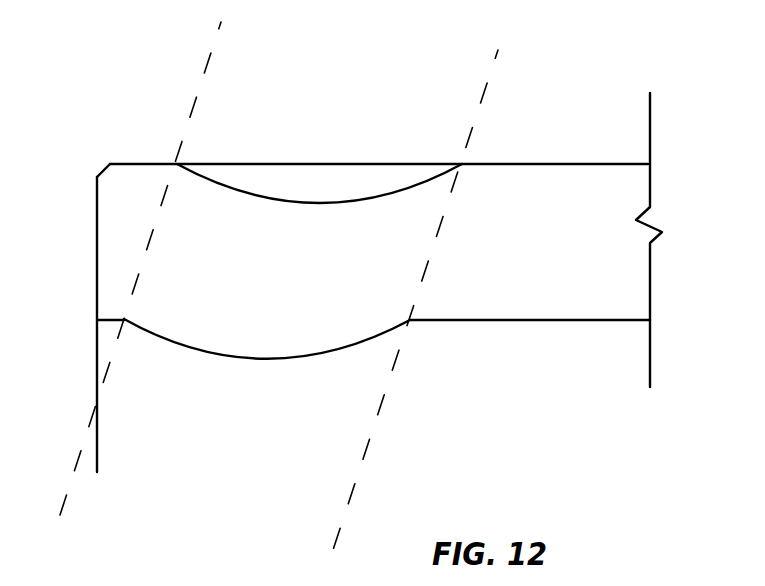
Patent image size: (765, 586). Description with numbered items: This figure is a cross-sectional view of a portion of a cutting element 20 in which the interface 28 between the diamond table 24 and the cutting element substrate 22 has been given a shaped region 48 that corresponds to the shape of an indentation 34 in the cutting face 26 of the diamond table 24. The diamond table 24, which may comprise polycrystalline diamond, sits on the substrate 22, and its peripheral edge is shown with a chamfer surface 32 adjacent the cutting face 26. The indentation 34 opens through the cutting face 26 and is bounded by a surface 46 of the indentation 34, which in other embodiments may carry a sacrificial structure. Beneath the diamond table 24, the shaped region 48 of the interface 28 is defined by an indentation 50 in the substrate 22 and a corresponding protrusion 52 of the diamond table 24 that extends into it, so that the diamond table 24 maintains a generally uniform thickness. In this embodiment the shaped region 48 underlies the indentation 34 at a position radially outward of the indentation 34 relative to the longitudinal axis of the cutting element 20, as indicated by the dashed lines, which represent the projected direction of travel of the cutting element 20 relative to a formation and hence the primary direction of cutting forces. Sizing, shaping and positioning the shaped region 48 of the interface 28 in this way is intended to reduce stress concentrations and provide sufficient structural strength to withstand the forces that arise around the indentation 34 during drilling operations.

The cutting element 20 is at (104, 82).
The cutting element substrate 22 is at (537, 378).
The diamond table 24 is at (537, 248).
The cutting face 26 is at (582, 132).
The interface 28 is at (110, 324).
The chamfer surface 32 is at (105, 164).
The indentation 34 is at (336, 195).
The surface of the indentation 46 is at (272, 197).
The shaped region 48 is at (170, 358).
The indentation in the substrate 50 is at (342, 350).
The protrusion 52 is at (328, 347).